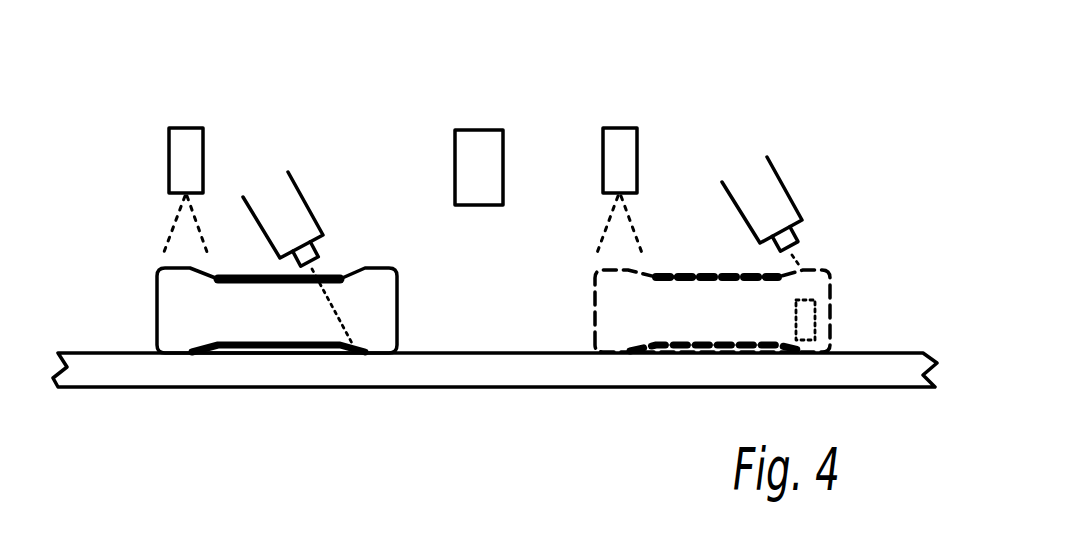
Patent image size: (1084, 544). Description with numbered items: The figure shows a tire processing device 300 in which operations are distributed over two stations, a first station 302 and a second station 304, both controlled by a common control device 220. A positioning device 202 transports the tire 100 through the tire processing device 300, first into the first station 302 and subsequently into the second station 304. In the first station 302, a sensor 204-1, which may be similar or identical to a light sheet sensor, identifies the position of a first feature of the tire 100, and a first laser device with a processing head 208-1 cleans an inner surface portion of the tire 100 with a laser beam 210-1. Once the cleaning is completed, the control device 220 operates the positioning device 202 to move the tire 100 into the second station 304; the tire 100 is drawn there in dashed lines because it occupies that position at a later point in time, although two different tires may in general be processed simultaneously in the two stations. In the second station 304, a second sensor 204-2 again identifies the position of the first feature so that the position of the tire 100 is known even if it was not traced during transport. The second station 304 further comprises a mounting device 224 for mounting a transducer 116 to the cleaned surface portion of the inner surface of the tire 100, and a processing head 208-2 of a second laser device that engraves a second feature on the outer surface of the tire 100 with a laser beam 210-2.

The tire 100 is at (397, 330).
The transducer 116 is at (797, 341).
The positioning device 202 is at (98, 352).
The sensor 204-1 is at (193, 150).
The second sensor 204-2 is at (625, 156).
The processing head 208-1 is at (290, 208).
The processing head 208-2 is at (785, 185).
The laser beam 210-1 is at (342, 315).
The laser beam 210-2 is at (793, 254).
The control device 220 is at (482, 206).
The mounting device 224 is at (808, 305).
The tire processing device 300 is at (566, 88).
The first station 302 is at (356, 100).
The second station 304 is at (786, 119).